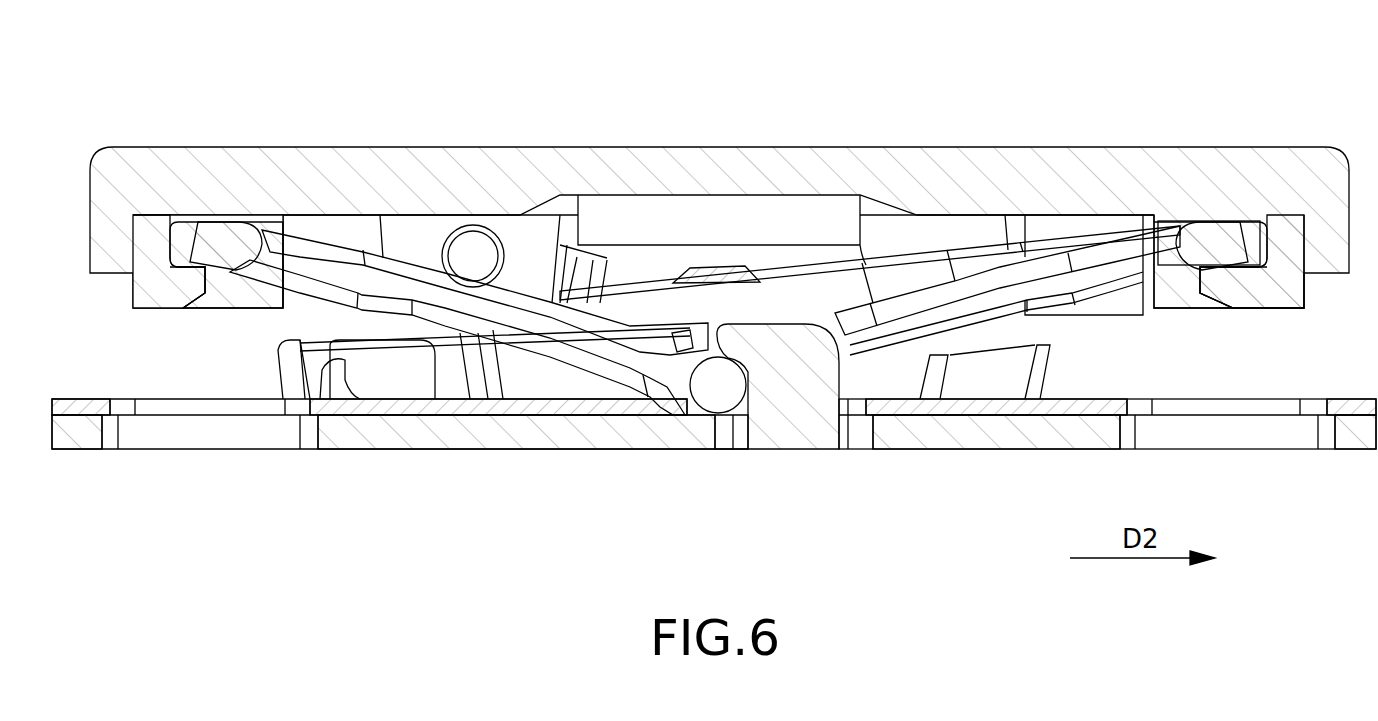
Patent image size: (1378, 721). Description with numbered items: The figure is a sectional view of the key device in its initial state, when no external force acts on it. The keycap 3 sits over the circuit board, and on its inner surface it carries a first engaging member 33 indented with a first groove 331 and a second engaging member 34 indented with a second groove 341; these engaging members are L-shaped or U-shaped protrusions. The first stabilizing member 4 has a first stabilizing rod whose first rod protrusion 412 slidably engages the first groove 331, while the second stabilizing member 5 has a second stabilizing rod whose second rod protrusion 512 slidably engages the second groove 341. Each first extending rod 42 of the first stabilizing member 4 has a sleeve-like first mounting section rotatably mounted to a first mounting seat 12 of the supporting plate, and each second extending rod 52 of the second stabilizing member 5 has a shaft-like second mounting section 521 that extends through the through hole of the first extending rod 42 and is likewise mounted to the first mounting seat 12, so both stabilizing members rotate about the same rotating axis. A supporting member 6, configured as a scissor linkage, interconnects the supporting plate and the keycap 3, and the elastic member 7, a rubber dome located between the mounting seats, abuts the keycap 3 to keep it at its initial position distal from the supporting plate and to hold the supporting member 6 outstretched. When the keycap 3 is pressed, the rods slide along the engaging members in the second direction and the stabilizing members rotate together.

The keycap 3 is at (790, 146).
The elastic member 7 is at (720, 210).
The first engaging member 33 is at (145, 245).
The first groove 331 is at (183, 287).
The second engaging member 34 is at (1285, 228).
The second groove 341 is at (1250, 287).
The first rod protrusion 412 is at (229, 236).
The first stabilizing member 4 is at (402, 259).
The first extending rod 42 is at (340, 282).
The second stabilizing member 5 is at (1047, 255).
The second extending rod 52 is at (1118, 272).
The second rod protrusion 512 is at (1213, 232).
The second mounting section 521 is at (702, 403).
The supporting member 6 is at (524, 372).
The first mounting seat 12 is at (790, 372).